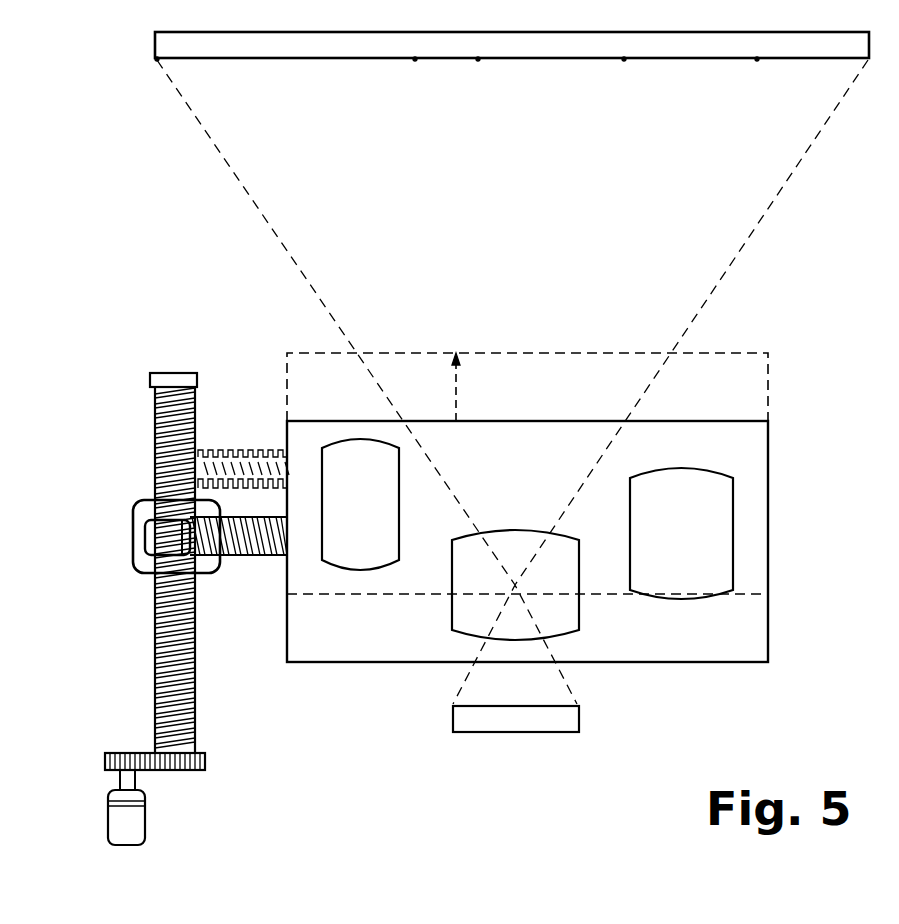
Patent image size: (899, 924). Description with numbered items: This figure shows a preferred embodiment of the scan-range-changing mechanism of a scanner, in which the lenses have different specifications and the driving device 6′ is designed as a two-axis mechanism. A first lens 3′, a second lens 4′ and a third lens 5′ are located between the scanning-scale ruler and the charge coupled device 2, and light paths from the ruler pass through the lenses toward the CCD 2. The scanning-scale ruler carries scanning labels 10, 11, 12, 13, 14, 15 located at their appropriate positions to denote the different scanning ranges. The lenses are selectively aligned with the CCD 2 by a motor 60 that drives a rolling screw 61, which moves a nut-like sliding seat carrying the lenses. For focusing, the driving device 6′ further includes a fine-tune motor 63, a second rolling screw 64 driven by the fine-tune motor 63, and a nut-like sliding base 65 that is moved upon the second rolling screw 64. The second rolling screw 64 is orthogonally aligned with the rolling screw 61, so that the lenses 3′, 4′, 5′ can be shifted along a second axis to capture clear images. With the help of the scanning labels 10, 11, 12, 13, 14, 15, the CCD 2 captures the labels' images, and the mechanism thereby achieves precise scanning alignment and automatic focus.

The charge coupled device 2 is at (513, 720).
The first lens 3′ is at (370, 452).
The second lens 4′ is at (512, 540).
The third lens 5′ is at (728, 508).
The driving device 6′ is at (256, 418).
The scanning label 10 is at (867, 61).
The scanning label 11 is at (157, 62).
The scanning label 12 is at (415, 61).
The scanning label 13 is at (478, 61).
The scanning label 14 is at (624, 61).
The scanning label 15 is at (757, 61).
The motor 60 is at (155, 537).
The rolling screw 61 is at (250, 557).
The fine-tune motor 63 is at (133, 830).
The second rolling screw 64 is at (155, 652).
The nut-like sliding base 65 is at (143, 505).